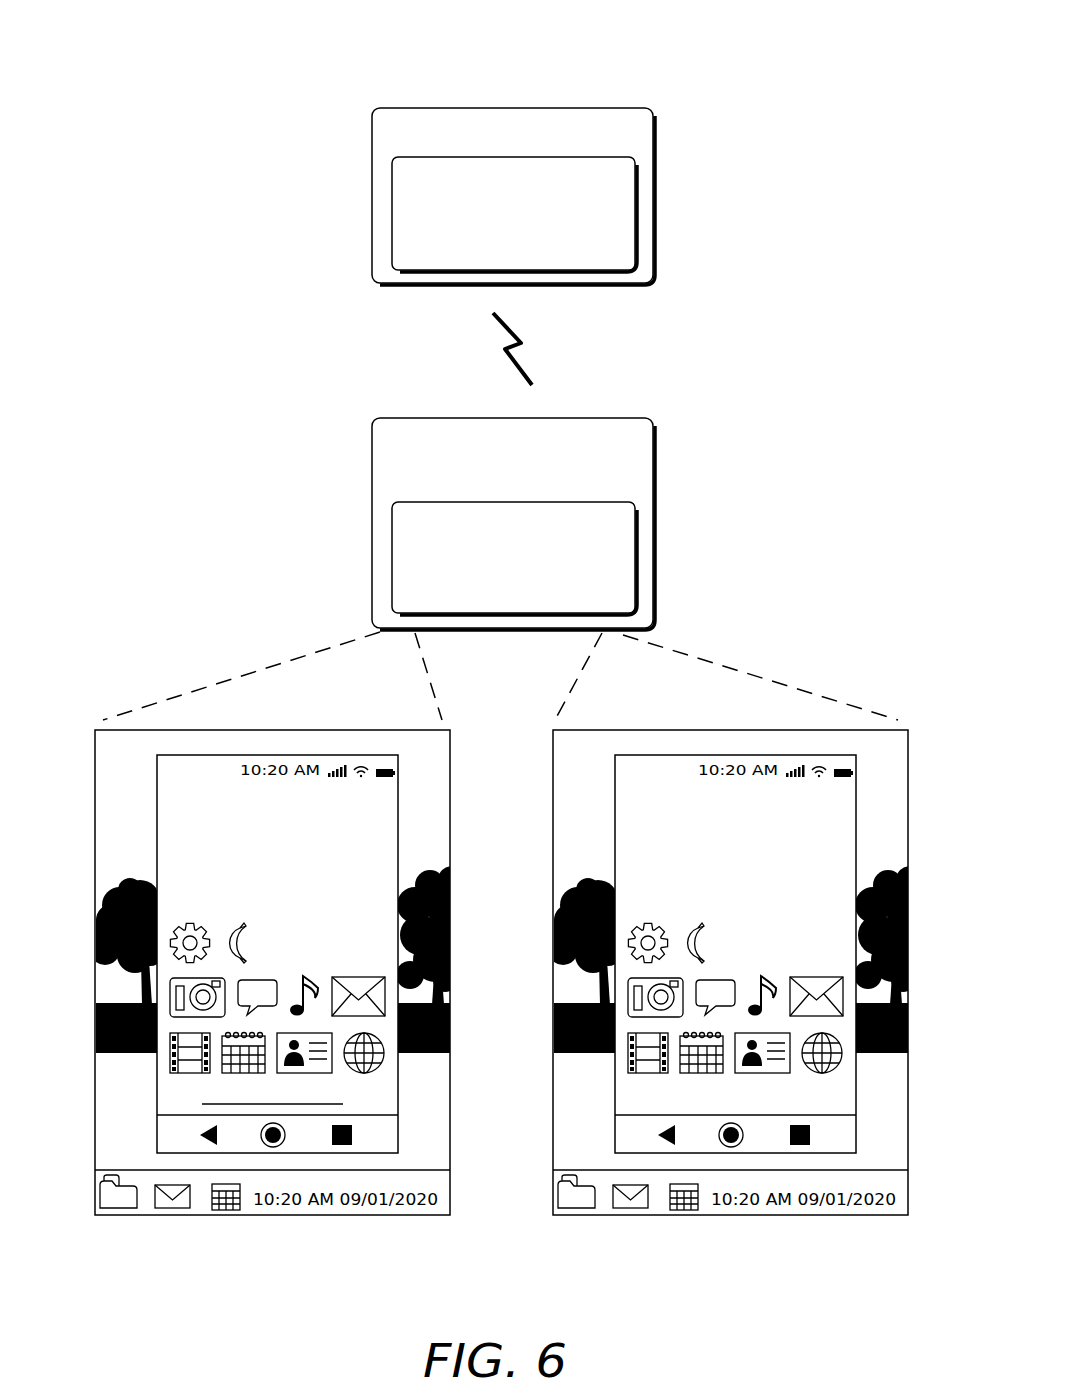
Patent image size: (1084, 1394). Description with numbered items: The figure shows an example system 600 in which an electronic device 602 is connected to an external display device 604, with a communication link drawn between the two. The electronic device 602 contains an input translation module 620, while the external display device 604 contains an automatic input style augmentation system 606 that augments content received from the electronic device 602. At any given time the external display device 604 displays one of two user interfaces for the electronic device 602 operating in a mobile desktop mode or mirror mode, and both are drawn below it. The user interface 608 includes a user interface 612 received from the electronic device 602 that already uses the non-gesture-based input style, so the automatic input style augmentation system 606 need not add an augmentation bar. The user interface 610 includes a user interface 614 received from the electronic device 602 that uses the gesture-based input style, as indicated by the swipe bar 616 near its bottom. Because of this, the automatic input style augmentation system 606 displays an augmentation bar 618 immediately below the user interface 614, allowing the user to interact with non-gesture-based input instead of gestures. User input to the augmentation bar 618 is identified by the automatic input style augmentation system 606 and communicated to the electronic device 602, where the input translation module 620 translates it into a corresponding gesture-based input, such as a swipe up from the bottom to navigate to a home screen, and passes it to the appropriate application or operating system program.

The system 600 is at (742, 58).
The electronic device 602 is at (513, 196).
The input translation module 620 is at (514, 214).
The external display device 604 is at (513, 524).
The automatic input style augmentation system 606 is at (514, 558).
The user interface 608 is at (728, 730).
The user interface 610 is at (272, 730).
The user interface 612 is at (615, 782).
The user interface 614 is at (398, 833).
The swipe bar 616 is at (332, 1104).
The augmentation bar 618 is at (398, 1135).